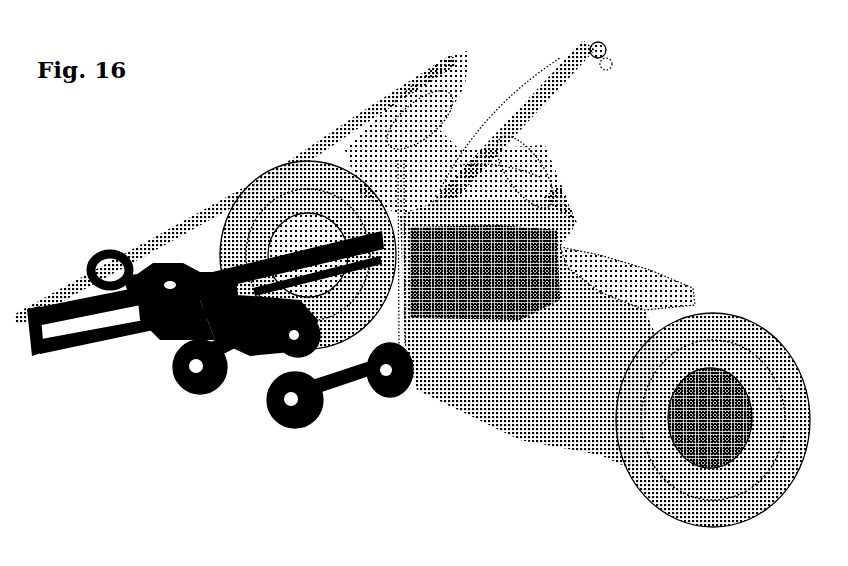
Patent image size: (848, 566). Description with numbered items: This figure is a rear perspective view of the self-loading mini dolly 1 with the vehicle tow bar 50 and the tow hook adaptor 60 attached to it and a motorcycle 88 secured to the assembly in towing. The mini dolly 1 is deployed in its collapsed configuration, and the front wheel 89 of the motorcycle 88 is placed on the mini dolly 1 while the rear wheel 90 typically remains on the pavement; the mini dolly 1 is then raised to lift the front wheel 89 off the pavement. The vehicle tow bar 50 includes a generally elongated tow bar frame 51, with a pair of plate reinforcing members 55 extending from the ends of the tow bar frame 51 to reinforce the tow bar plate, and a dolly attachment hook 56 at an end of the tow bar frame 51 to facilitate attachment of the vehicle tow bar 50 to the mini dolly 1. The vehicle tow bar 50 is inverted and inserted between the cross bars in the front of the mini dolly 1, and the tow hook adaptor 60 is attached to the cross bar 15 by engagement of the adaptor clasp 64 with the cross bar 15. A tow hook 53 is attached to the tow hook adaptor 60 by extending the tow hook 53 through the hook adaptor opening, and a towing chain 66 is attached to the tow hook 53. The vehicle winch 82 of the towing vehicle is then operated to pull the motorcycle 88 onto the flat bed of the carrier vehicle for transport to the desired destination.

The mini dolly 1 is at (347, 434).
The cross bar 15 is at (195, 330).
The vehicle tow bar 50 is at (80, 298).
The tow bar frame 51 is at (100, 284).
The tow hook 53 is at (163, 318).
The plate reinforcing members 55 is at (64, 352).
The dolly attachment hook 56 is at (28, 352).
The tow hook adaptor 60 is at (218, 300).
The adaptor clasp 64 is at (243, 336).
The towing chain 66 is at (101, 252).
The vehicle winch 82 is at (376, 98).
The motorcycle 88 is at (620, 208).
The front wheel 89 is at (220, 242).
The rear wheel 90 is at (717, 318).